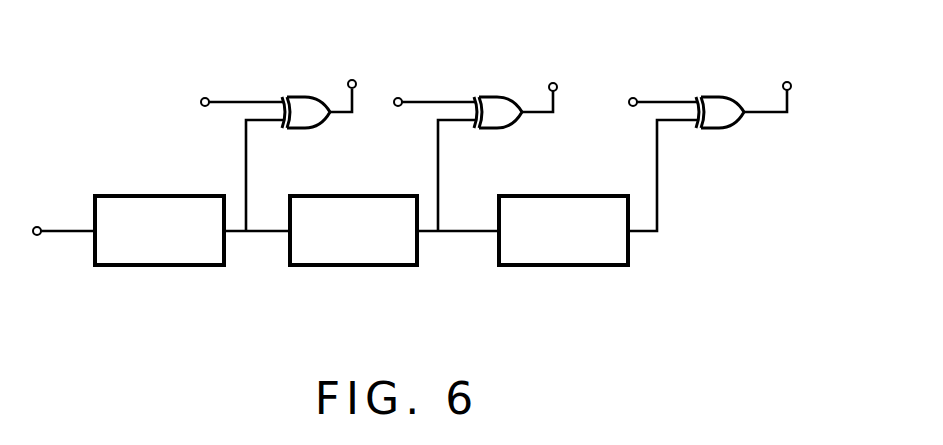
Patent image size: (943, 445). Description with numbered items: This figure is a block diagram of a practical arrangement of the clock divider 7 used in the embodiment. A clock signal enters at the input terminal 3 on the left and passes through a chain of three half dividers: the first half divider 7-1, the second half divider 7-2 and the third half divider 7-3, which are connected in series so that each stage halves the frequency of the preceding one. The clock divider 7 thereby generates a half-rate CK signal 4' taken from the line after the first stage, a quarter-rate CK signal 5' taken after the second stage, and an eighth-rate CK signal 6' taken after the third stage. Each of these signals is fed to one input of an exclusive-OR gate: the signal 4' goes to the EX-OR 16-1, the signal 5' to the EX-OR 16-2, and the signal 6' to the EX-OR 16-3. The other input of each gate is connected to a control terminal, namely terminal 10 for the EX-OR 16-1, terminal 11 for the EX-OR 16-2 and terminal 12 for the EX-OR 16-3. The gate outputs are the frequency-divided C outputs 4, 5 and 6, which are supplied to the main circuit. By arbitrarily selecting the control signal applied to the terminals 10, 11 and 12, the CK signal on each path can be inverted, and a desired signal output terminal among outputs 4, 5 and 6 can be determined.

The input terminal 3 is at (37, 226).
The clock divider 7 is at (361, 282).
The 1/2 divider 7-1 is at (153, 267).
The 1/2 divider 7-2 is at (350, 267).
The 1/2 divider 7-3 is at (560, 267).
The 1/2 CK signal 4' is at (264, 175).
The 1/4 CK signal 5' is at (456, 175).
The 1/8 CK signal 6' is at (662, 175).
The EX-OR 16-1 is at (314, 130).
The EX-OR 16-2 is at (506, 130).
The EX-OR 16-3 is at (728, 130).
The terminal 10 is at (204, 96).
The terminal 11 is at (398, 96).
The terminal 12 is at (635, 96).
The frequency-divided C output 4 is at (344, 76).
The frequency-divided C output 5 is at (541, 76).
The frequency-divided C output 6 is at (769, 76).